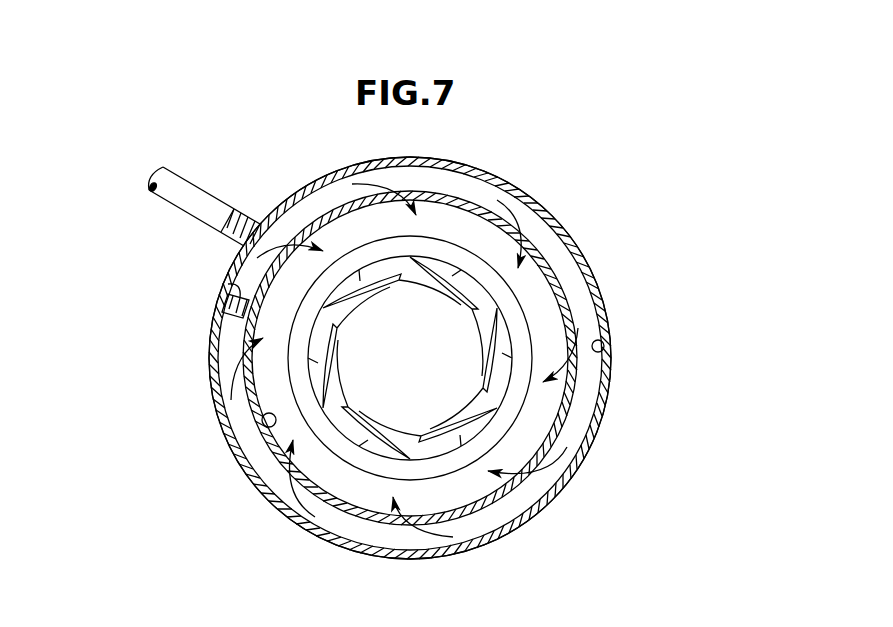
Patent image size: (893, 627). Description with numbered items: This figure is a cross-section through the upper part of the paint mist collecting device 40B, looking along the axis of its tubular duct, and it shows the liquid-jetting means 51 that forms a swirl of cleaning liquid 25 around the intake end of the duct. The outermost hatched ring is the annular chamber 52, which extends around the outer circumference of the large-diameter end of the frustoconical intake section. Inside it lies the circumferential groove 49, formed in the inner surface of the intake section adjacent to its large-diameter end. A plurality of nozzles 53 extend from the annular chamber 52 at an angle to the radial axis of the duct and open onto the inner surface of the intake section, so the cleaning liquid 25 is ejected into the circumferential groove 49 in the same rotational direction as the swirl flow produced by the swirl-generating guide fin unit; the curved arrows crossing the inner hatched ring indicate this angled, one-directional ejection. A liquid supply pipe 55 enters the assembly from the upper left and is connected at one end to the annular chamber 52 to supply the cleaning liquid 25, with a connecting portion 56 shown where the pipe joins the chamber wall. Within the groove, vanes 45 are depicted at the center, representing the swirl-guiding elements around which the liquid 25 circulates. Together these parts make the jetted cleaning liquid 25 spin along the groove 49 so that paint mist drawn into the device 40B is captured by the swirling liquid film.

The cleaning liquid 25 is at (545, 472).
The paint mist collecting device 40B is at (204, 420).
The blades 45 is at (478, 343).
The circumferential groove 49 is at (262, 426).
The liquid-jetting means 51 is at (611, 394).
The annular chamber 52 is at (606, 343).
The nozzles 53 is at (520, 237).
The liquid supply pipe 55 is at (162, 210).
The connecting portion 56 is at (223, 281).